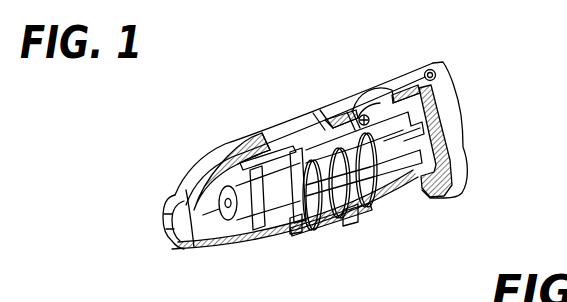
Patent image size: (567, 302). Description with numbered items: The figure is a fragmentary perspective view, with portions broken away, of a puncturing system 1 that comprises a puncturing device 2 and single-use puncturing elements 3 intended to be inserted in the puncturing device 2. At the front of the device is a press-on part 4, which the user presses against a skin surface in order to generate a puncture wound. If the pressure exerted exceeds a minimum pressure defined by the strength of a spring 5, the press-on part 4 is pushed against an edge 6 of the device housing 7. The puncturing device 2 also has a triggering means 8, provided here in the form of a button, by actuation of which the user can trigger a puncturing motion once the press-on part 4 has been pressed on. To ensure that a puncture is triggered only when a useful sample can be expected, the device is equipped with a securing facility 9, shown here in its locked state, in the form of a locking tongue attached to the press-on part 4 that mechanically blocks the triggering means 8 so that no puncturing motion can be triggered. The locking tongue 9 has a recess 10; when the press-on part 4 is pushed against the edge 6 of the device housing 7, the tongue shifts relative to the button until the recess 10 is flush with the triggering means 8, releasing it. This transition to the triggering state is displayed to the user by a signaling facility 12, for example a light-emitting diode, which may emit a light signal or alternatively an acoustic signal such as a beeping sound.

The puncturing system 1 is at (200, 118).
The puncturing device 2 is at (471, 111).
The puncturing elements 3 is at (220, 217).
The press-on part 4 is at (164, 199).
The spring 5 is at (350, 220).
The edge 6 is at (318, 112).
The device housing 7 is at (330, 120).
The triggering means 8 is at (390, 90).
The securing facility 9 is at (356, 122).
The recess 10 is at (364, 114).
The signaling facility 12 is at (438, 72).